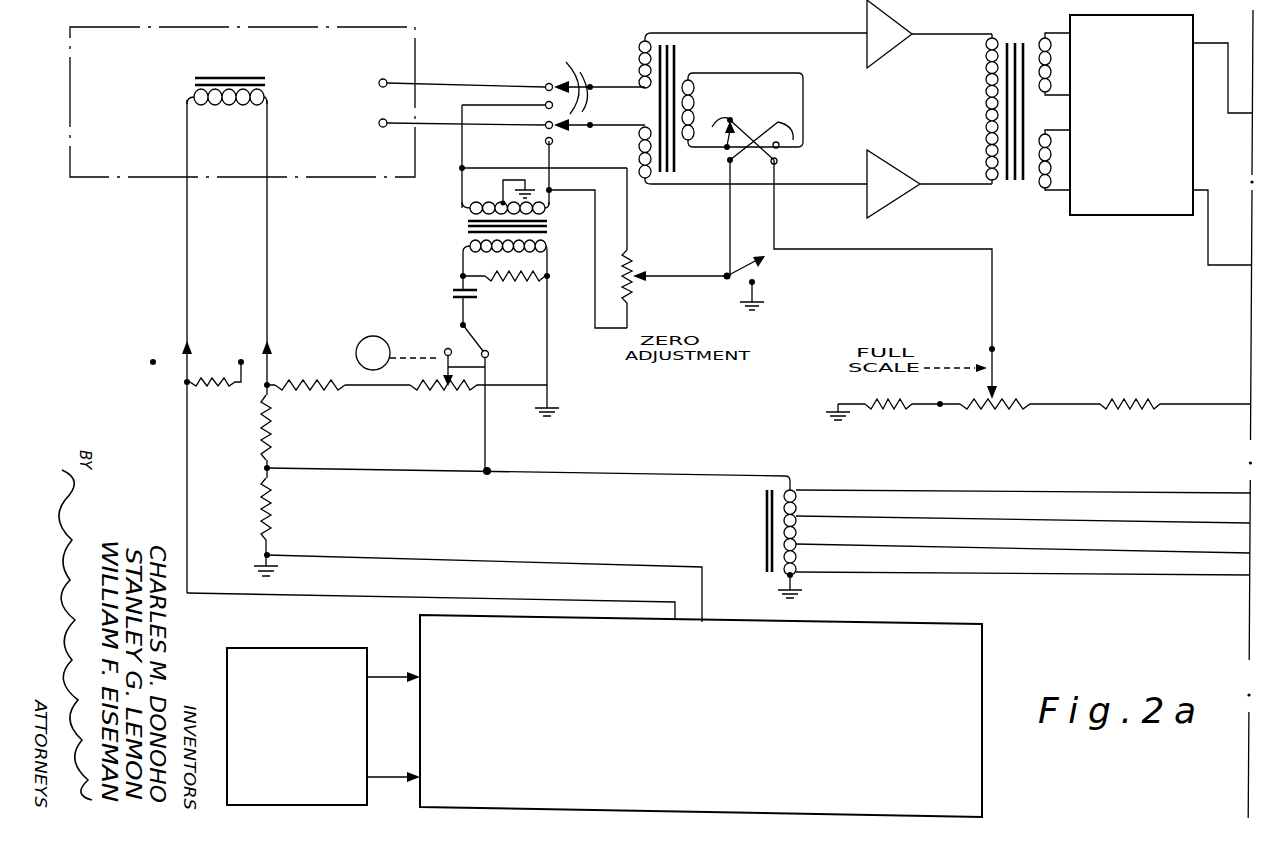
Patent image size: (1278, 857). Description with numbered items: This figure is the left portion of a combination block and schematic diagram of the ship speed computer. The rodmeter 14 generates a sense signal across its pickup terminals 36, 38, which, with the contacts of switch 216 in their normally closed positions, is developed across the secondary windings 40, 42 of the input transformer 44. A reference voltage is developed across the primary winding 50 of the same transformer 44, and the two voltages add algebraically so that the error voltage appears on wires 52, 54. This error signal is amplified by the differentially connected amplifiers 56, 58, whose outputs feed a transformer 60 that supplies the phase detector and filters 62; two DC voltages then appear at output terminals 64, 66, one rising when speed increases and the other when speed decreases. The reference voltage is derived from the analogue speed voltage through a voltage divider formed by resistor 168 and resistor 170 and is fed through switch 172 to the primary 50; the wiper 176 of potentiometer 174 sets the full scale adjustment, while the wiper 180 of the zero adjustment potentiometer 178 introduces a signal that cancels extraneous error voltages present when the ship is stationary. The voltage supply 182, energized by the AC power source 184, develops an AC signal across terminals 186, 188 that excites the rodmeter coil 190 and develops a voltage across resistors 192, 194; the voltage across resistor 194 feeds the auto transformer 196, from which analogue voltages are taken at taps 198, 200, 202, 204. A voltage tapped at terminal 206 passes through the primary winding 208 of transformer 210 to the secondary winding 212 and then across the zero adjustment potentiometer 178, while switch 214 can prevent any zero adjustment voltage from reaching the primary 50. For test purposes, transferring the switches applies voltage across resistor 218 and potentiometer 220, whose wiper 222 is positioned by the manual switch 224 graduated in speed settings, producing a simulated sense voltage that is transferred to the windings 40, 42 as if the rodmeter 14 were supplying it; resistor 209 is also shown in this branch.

The rodmeter 14 is at (330, 28).
The rodmeter pickup terminal 36 is at (381, 79).
The rodmeter pickup terminal 38 is at (383, 127).
The secondary winding 40 is at (639, 58).
The secondary winding 42 is at (639, 153).
The input transformer 44 is at (668, 46).
The primary winding 50 is at (716, 66).
The wire 52 is at (737, 33).
The wire 54 is at (696, 186).
The amplifier 56 is at (905, 27).
The amplifier 58 is at (889, 199).
The transformer 60 is at (1018, 32).
The phase detector and filters 62 is at (1118, 216).
The output terminal 64 is at (1228, 267).
The output terminal 66 is at (1240, 114).
The resistor 168 is at (1134, 402).
The resistor 170 is at (893, 412).
The switch 172 is at (752, 127).
The potentiometer 174 is at (1003, 412).
The wiper 176 is at (998, 376).
The zero adjustment potentiometer 178 is at (635, 272).
The wiper 180 is at (650, 281).
The voltage supply 182 is at (930, 623).
The AC power source 184 is at (287, 648).
The terminal 186 is at (384, 600).
The terminal 188 is at (508, 565).
The rodmeter coil 190 is at (186, 97).
The resistor 192 is at (260, 432).
The resistor 194 is at (269, 505).
The auto transformer 196 is at (766, 517).
The tap 198 is at (804, 489).
The tap 200 is at (804, 517).
The tap 202 is at (804, 545).
The tap 204 is at (804, 573).
The terminal 206 is at (492, 470).
The primary winding 208 is at (461, 268).
The resistor 209 is at (182, 382).
The transformer 210 is at (272, 384).
The secondary winding 212 is at (474, 339).
The switch 214 is at (768, 262).
The switch 216 is at (553, 98).
The resistor 218 is at (311, 396).
The potentiometer 220 is at (441, 396).
The wiper 222 is at (487, 368).
The manual switch 224 is at (379, 337).